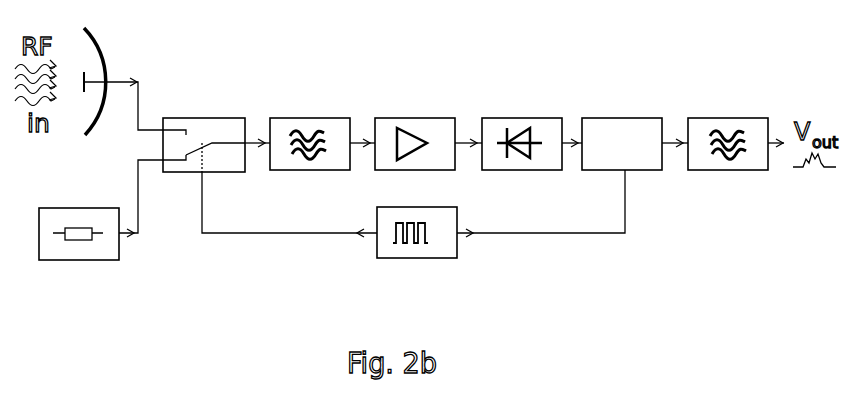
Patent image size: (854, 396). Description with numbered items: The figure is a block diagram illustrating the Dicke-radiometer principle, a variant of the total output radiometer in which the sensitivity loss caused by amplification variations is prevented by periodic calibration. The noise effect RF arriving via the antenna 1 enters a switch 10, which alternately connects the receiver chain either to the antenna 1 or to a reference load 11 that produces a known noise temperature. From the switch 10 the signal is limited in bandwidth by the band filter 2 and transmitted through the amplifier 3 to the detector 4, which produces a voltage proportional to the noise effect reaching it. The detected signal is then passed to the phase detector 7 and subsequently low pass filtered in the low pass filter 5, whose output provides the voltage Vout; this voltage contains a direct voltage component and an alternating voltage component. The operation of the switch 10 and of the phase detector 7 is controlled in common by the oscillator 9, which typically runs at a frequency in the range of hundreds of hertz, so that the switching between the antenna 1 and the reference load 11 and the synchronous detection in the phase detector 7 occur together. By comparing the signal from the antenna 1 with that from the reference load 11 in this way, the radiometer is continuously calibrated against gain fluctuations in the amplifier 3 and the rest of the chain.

The antenna 1 is at (100, 117).
The switch 10 is at (220, 124).
The band filter 2 is at (322, 122).
The amplifier 3 is at (428, 122).
The detector 4 is at (523, 122).
The phase detector 7 is at (635, 121).
The low pass filter 5 is at (735, 121).
The oscillator 9 is at (450, 247).
The reference load 11 is at (103, 248).